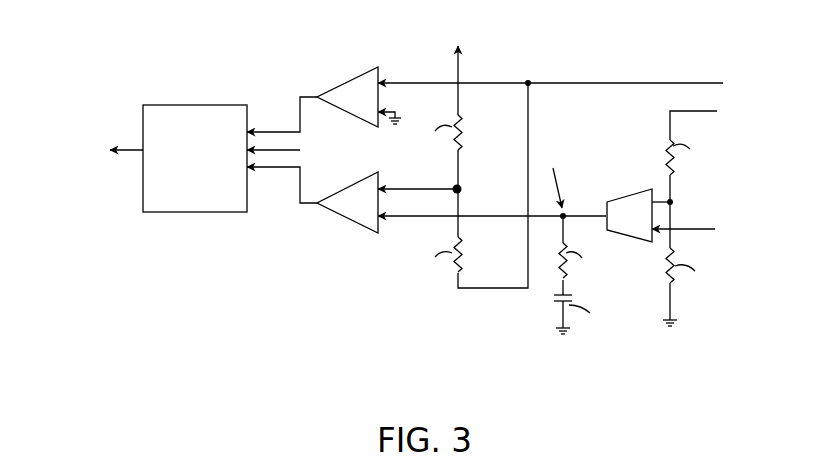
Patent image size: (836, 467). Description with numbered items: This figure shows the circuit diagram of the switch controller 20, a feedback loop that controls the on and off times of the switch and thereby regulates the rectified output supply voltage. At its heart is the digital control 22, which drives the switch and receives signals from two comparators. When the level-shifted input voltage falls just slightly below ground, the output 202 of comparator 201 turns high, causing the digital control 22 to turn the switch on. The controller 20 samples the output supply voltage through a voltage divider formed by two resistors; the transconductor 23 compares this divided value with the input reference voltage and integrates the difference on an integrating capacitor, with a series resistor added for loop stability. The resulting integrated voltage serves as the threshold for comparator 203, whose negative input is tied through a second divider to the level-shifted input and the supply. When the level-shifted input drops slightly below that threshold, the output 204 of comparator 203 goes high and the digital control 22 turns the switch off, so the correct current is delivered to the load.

The switch controller 20 is at (292, 295).
The digital control circuitry 22 is at (208, 195).
The transconductor 23 is at (612, 200).
The comparator 201 is at (360, 75).
The output of comparator 202 is at (284, 131).
The comparator 203 is at (360, 225).
The output of comparator 204 is at (286, 169).